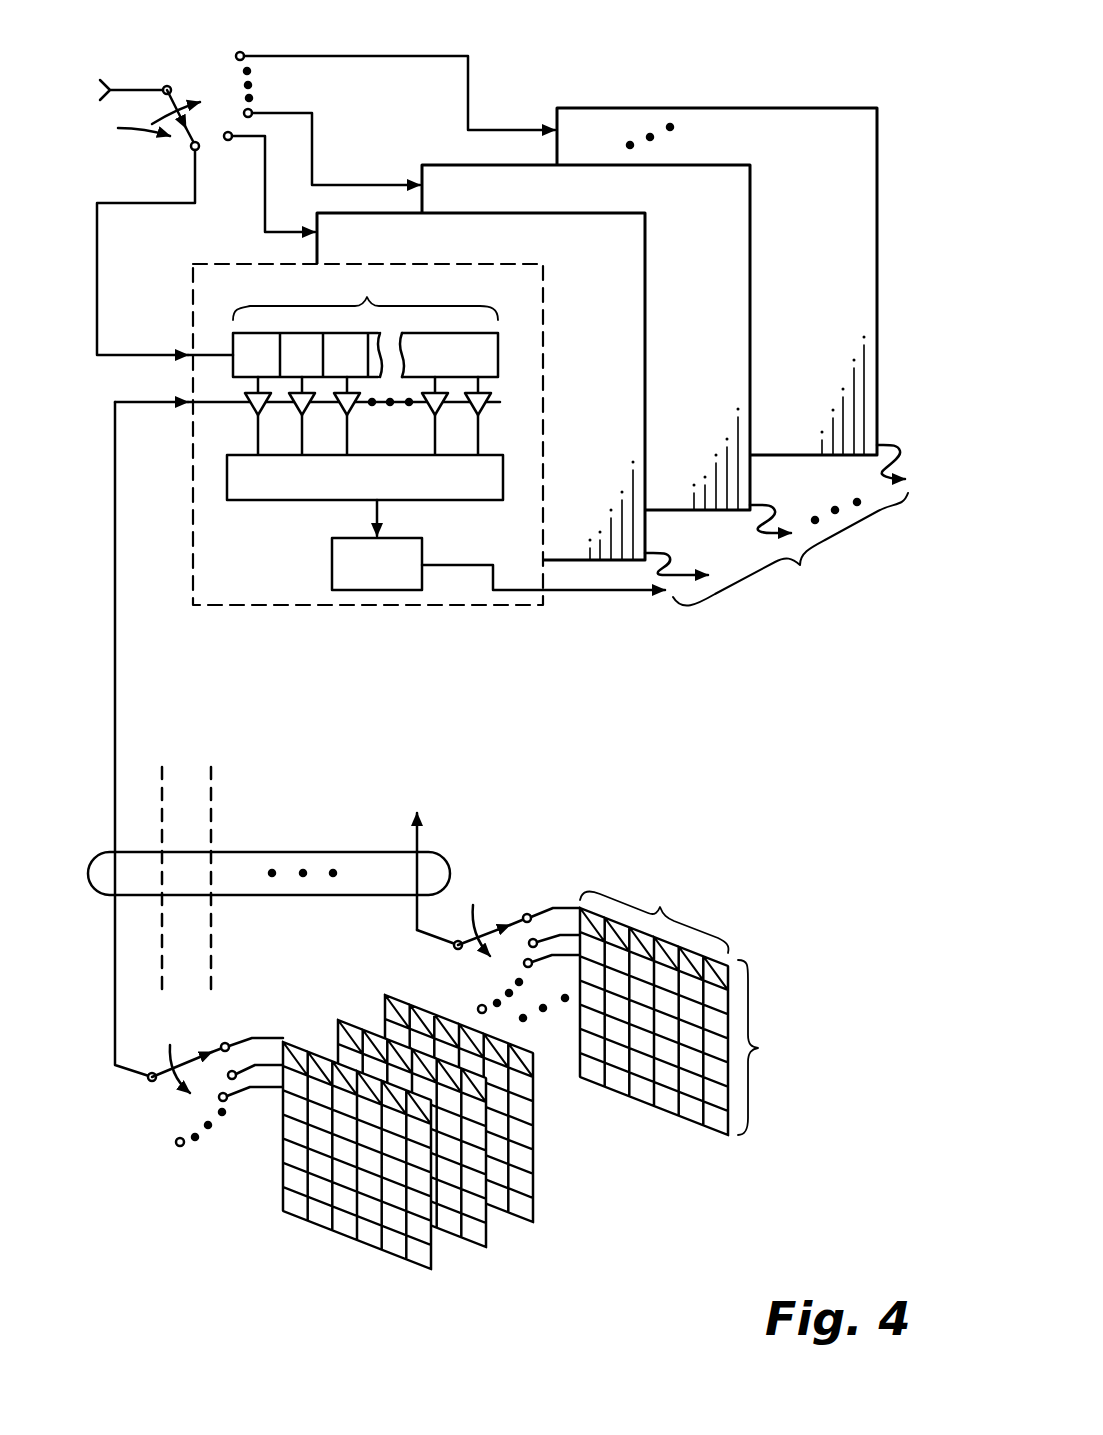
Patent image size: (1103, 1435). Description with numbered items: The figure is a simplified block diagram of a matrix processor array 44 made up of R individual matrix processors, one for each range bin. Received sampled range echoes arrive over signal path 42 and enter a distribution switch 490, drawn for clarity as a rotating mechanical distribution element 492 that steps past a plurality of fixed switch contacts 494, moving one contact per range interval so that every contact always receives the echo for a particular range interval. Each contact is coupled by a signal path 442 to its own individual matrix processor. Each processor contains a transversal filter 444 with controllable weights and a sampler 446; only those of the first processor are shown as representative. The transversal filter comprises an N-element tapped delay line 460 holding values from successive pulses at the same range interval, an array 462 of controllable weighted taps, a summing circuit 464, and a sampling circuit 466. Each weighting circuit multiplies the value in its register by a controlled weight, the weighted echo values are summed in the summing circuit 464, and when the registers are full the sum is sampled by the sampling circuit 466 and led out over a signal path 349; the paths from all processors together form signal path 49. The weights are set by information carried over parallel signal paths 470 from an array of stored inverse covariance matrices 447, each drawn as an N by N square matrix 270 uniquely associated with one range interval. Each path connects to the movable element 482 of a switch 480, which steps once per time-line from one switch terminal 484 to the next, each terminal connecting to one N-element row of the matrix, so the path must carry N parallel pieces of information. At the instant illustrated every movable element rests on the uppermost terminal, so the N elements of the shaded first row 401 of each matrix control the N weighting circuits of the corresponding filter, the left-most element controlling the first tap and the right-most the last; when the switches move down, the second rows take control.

The signal path 42 is at (128, 90).
The matrix processor array 44 is at (507, 378).
The signal path 49 is at (790, 549).
The inverse covariance matrix 270 is at (535, 1220).
The signal path 349 is at (682, 523).
The shaded row elements 401 is at (534, 1076).
The signal path 442 is at (326, 226).
The transversal filter 444 is at (512, 356).
The sampler 446 is at (332, 568).
The stored inverse covariance matrices 447 is at (618, 1165).
The tapped delay line 460 is at (500, 335).
The array of controllable weighted taps 462 is at (327, 435).
The summing circuit 464 is at (262, 502).
The sampling circuit 466 is at (422, 559).
The signal paths 470 is at (318, 897).
The switch 480 is at (338, 962).
The movable element 482 is at (483, 913).
The switch terminal 484 is at (330, 1030).
The distribution switch 490 is at (113, 148).
The rotating distribution element 492 is at (159, 97).
The fixed switch contacts 494 is at (222, 107).